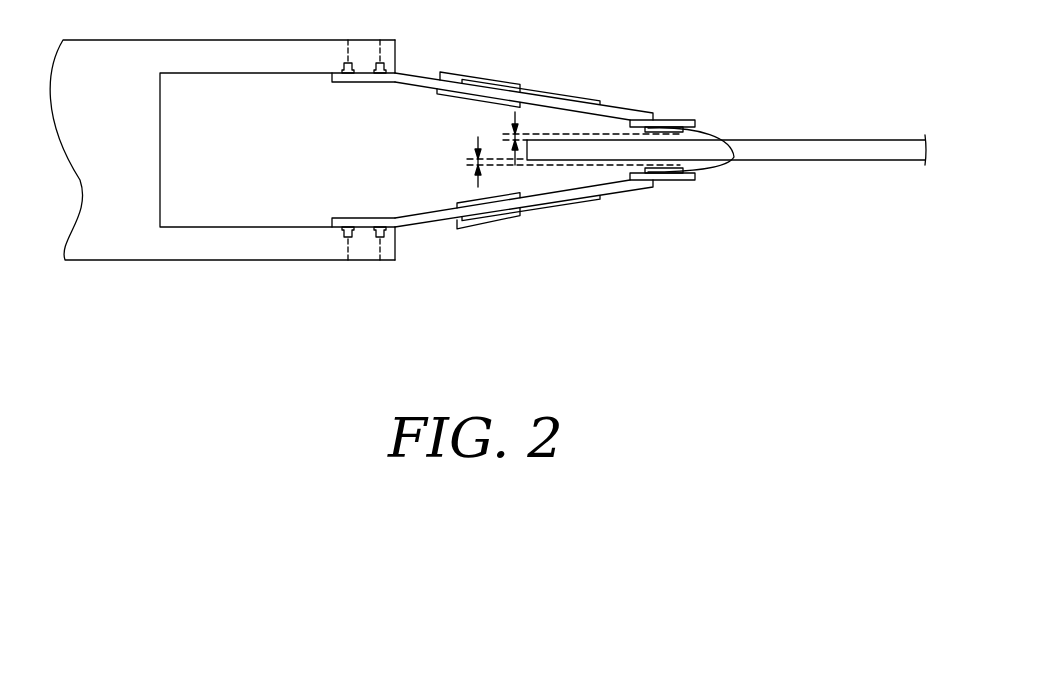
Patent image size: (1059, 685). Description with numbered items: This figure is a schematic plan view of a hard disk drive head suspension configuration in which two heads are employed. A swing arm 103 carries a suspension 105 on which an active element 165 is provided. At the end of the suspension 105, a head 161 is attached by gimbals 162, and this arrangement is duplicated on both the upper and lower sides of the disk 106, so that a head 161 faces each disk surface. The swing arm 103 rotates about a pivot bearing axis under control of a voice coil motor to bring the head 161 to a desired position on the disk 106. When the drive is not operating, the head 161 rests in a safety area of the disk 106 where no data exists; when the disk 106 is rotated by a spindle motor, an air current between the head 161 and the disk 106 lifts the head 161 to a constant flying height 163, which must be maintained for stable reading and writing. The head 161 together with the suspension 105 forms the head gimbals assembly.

The swing arm 103 is at (222, 260).
The suspension 105 is at (522, 90).
The disk 106 is at (837, 153).
The head 161 is at (734, 158).
The gimbals 162 is at (638, 178).
The flying height 163 is at (478, 187).
The active element 165 is at (462, 80).